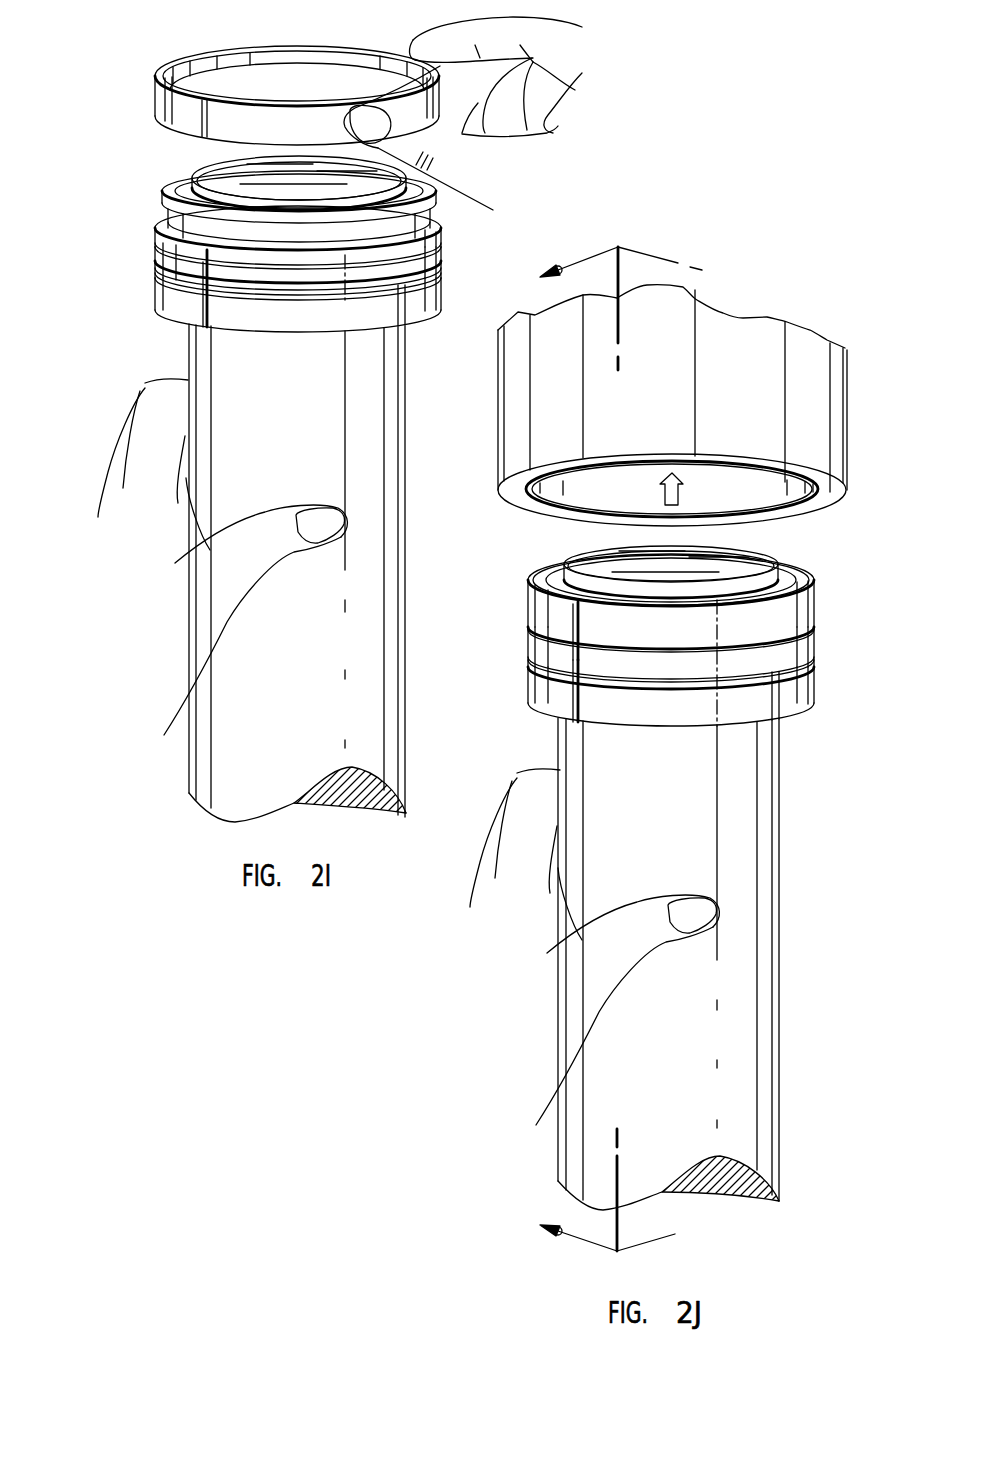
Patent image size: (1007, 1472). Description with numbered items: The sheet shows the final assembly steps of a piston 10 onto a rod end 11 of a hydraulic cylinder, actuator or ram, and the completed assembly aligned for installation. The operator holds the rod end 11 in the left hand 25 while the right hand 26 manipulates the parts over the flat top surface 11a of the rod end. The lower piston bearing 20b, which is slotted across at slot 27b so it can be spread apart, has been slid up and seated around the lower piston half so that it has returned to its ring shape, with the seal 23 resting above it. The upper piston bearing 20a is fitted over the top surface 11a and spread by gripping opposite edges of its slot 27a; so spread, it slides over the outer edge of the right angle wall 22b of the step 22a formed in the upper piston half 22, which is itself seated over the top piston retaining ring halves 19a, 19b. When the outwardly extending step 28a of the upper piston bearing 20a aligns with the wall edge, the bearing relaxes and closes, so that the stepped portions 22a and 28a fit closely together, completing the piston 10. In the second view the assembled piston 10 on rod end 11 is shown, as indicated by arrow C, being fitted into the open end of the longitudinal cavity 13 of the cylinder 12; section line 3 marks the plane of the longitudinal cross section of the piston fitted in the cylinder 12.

In FIG. 2J, the section line 3 is at (621, 753).
In FIG. 2I, the piston 10 is at (138, 168).
In FIG. 2J, the piston 10 is at (517, 538).
In FIG. 2I, the rod end 11 is at (294, 424).
In FIG. 2J, the rod end 11 is at (666, 817).
In FIG. 2I, the flat top surface 11a is at (217, 170).
In FIG. 2J, the flat top surface 11a is at (643, 550).
In FIG. 2J, the cylinder 12 is at (664, 383).
In FIG. 2J, the longitudinal cavity 13 is at (750, 497).
In FIG. 2I, the top piston retaining ring half 19a is at (173, 182).
In FIG. 2J, the top piston retaining ring half 19a is at (547, 565).
In FIG. 2I, the top piston retaining ring half 19b is at (428, 181).
In FIG. 2I, the upper piston bearing 20a is at (152, 80).
In FIG. 2J, the upper piston bearing 20a is at (535, 610).
In FIG. 2I, the lower piston bearing 20b is at (157, 310).
In FIG. 2J, the lower piston bearing 20b is at (803, 690).
In FIG. 2I, the upper piston half 22 is at (162, 199).
In FIG. 2J, the upper piston half 22 is at (802, 578).
In FIG. 2I, the step 22a is at (172, 229).
In FIG. 2I, the right angle wall 22b is at (441, 224).
In FIG. 2I, the seal 23 is at (162, 262).
In FIG. 2J, the seal 23 is at (535, 643).
In FIG. 2I, the left hand 25 is at (162, 604).
In FIG. 2J, the left hand 25 is at (532, 996).
In FIG. 2I, the right hand 26 is at (531, 175).
In FIG. 2J, the right hand 26 is at (904, 565).
In FIG. 2I, the slot 27a is at (157, 103).
In FIG. 2J, the slot 27a is at (533, 597).
In FIG. 2I, the slot 27b is at (200, 322).
In FIG. 2J, the slot 27b is at (563, 712).
In FIG. 2I, the outwardly extending step 28a is at (190, 62).
In FIG. 2J, the arrow C is at (683, 487).